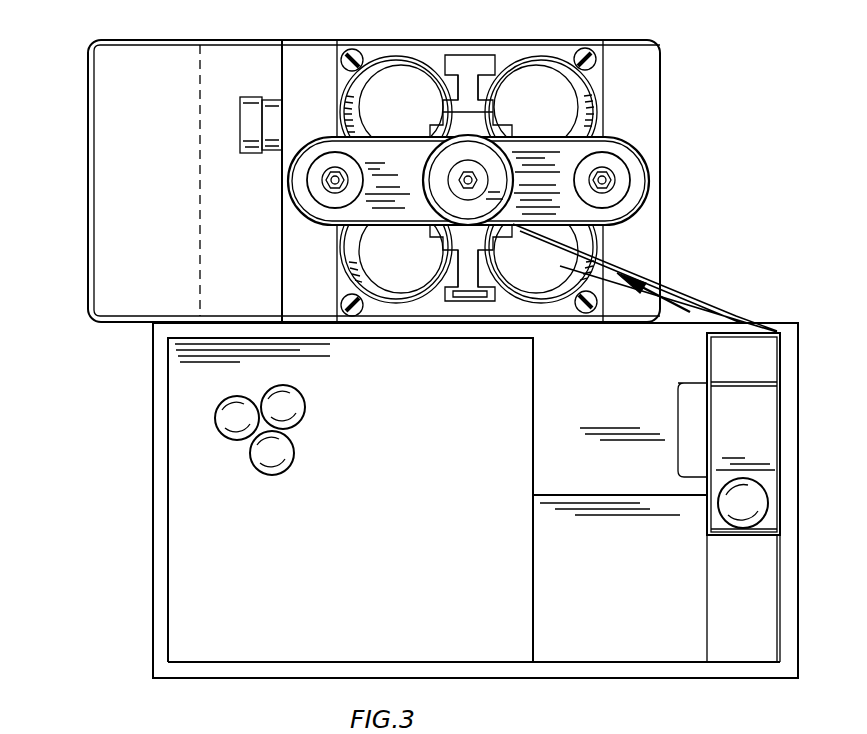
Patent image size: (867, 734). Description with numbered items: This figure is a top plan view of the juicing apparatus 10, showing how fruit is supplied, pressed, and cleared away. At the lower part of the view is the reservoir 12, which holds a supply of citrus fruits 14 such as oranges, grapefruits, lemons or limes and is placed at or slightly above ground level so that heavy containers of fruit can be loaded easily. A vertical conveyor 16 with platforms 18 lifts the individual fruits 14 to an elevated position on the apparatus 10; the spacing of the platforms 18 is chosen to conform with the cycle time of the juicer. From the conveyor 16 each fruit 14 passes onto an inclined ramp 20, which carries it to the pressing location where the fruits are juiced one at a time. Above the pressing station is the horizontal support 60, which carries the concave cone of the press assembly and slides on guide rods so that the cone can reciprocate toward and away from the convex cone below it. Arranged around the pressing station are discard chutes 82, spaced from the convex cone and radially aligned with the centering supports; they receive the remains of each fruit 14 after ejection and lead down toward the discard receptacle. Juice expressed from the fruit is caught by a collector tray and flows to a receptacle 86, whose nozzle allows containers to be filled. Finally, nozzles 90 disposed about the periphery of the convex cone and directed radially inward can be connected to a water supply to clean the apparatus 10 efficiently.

The juicing apparatus 10 is at (118, 499).
The reservoir 12 is at (348, 519).
The citrus fruits 14 is at (750, 494).
The vertical conveyor 16 is at (795, 358).
The platforms 18 is at (772, 522).
The inclined ramp 20 is at (690, 294).
The horizontal support 60 is at (416, 163).
The discard chutes 82 is at (398, 56).
The receptacle 86 is at (88, 235).
The nozzles 90 is at (363, 50).